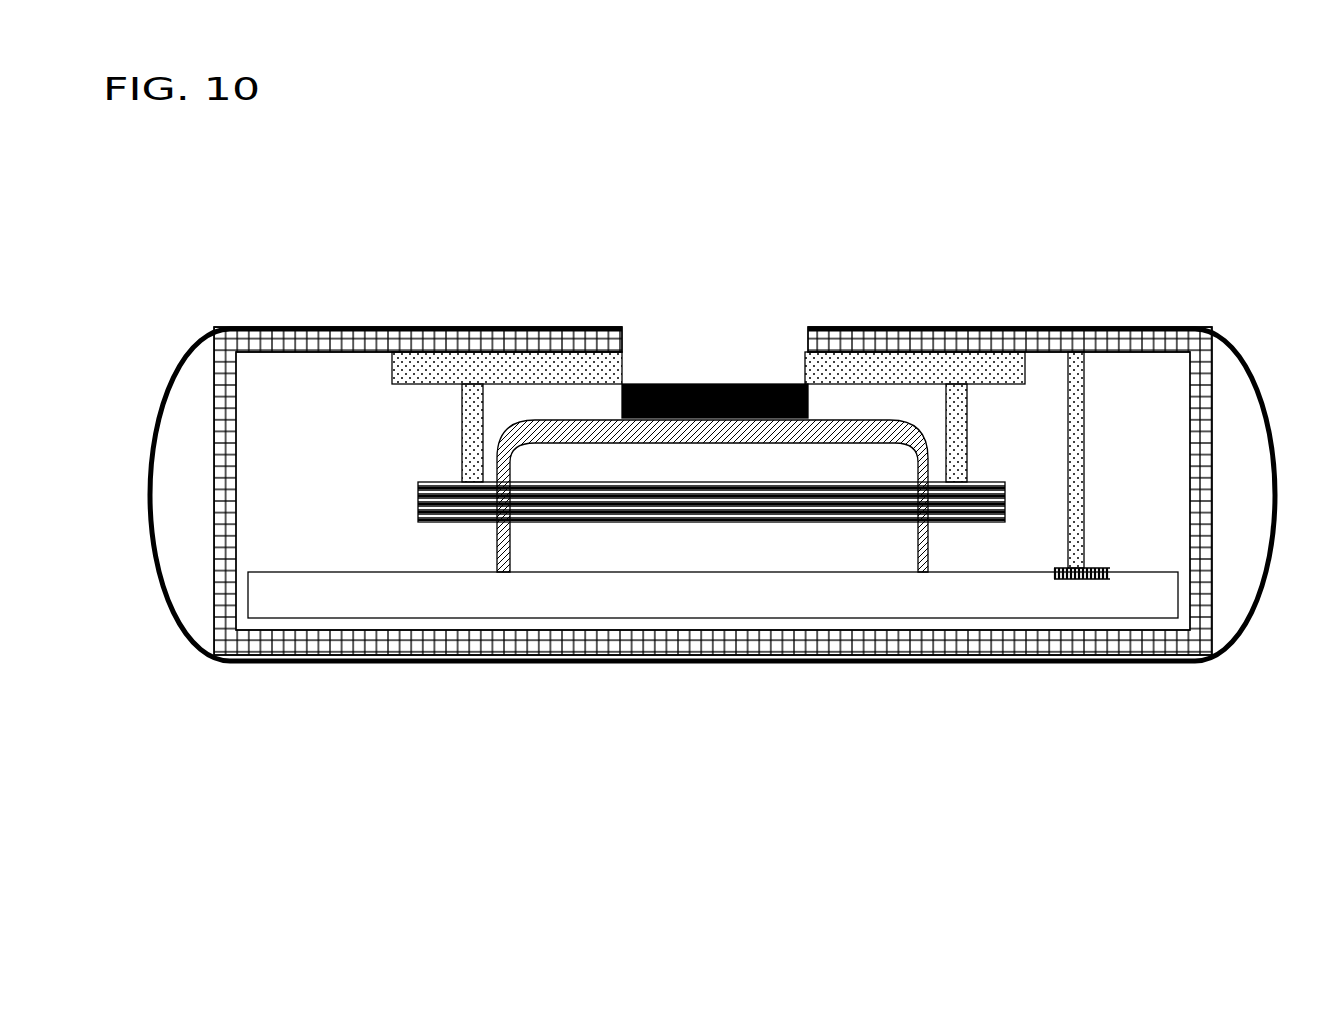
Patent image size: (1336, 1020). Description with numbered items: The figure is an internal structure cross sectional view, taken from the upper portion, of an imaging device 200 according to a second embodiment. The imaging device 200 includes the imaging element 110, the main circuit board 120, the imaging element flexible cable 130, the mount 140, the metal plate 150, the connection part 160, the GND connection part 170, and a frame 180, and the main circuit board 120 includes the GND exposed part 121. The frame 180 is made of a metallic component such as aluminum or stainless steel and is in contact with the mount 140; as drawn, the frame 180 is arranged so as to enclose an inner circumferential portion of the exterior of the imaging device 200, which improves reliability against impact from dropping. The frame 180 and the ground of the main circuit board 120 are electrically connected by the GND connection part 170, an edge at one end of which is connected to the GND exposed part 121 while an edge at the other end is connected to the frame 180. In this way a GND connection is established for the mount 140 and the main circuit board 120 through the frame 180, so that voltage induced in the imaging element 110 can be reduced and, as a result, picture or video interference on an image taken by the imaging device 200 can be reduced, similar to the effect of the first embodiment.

The imaging device 200 is at (337, 204).
The imaging element 110 is at (677, 383).
The main circuit board 120 is at (572, 600).
The GND exposed part 121 is at (1078, 580).
The imaging element flexible cable 130 is at (921, 572).
The mount 140 is at (840, 362).
The metal plate 150 is at (456, 510).
The connection part 160 is at (462, 434).
The GND connection part 170 is at (1075, 405).
The frame 180 is at (1167, 345).